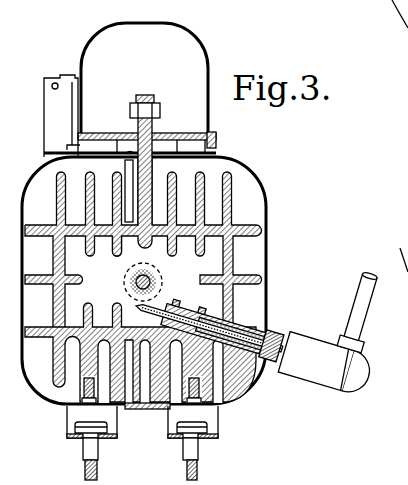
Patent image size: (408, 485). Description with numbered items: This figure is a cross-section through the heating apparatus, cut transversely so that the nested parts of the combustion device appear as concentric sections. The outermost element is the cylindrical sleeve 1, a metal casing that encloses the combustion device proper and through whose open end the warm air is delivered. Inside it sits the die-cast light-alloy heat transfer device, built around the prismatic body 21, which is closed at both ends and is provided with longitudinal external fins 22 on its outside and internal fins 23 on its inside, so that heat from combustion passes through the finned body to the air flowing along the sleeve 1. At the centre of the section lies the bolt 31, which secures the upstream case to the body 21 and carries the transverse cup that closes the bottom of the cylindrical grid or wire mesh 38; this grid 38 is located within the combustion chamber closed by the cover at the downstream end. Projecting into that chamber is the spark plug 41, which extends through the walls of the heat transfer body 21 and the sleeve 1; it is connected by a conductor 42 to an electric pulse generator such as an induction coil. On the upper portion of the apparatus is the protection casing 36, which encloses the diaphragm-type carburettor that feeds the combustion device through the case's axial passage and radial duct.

The cylindrical sleeve 1 is at (265, 203).
The prismatic body 21 is at (236, 258).
The external fins 22 is at (230, 188).
The internal fins 23 is at (108, 266).
The bolt 31 is at (157, 285).
The protection casing 36 is at (82, 52).
The cylindrical grid or wire mesh 38 is at (162, 266).
The spark plug 41 is at (172, 332).
The conductor 42 is at (362, 300).